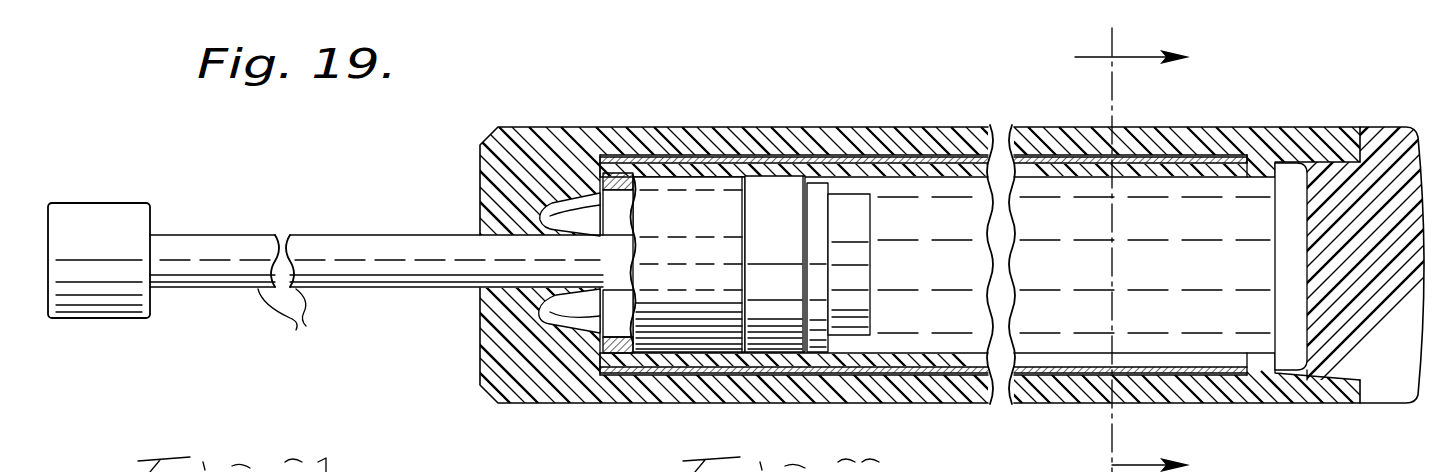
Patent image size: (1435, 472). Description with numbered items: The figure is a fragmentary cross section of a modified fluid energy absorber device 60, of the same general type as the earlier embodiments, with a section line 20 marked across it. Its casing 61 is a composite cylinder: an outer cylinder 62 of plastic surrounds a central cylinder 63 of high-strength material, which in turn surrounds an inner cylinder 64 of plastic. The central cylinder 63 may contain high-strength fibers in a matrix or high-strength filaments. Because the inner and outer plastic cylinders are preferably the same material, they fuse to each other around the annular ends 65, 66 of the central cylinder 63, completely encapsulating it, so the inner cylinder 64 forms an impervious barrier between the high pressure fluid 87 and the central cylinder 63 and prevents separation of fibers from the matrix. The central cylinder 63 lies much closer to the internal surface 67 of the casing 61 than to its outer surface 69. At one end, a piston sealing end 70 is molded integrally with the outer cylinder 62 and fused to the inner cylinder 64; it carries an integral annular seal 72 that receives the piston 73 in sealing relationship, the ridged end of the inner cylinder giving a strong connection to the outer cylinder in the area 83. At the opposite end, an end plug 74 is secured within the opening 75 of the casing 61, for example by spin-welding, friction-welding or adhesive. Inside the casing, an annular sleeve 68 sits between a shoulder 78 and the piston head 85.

The section line 20- 20 is at (1122, 249).
The fluid energy absorber device 60 is at (852, 98).
The casing 61 is at (1047, 127).
The outer cylinder 62 is at (714, 140).
The central cylinder 63 is at (674, 166).
The inner cylinder 64 is at (648, 160).
The annular end 65 is at (578, 152).
The annular end 66 is at (1262, 166).
The internal surface 67 is at (1038, 178).
The annular sleeve 68 is at (616, 192).
The outer surface 69 is at (900, 127).
The piston sealing end 70 is at (500, 178).
The annular seal 72 is at (540, 321).
The piston 73 is at (325, 275).
The end plug 74 is at (1412, 126).
The opening 75 is at (1322, 378).
The shoulder 78 is at (616, 353).
The area 83 is at (1262, 170).
The piston head 85 is at (760, 246).
The high pressure fluid 87 is at (1131, 286).